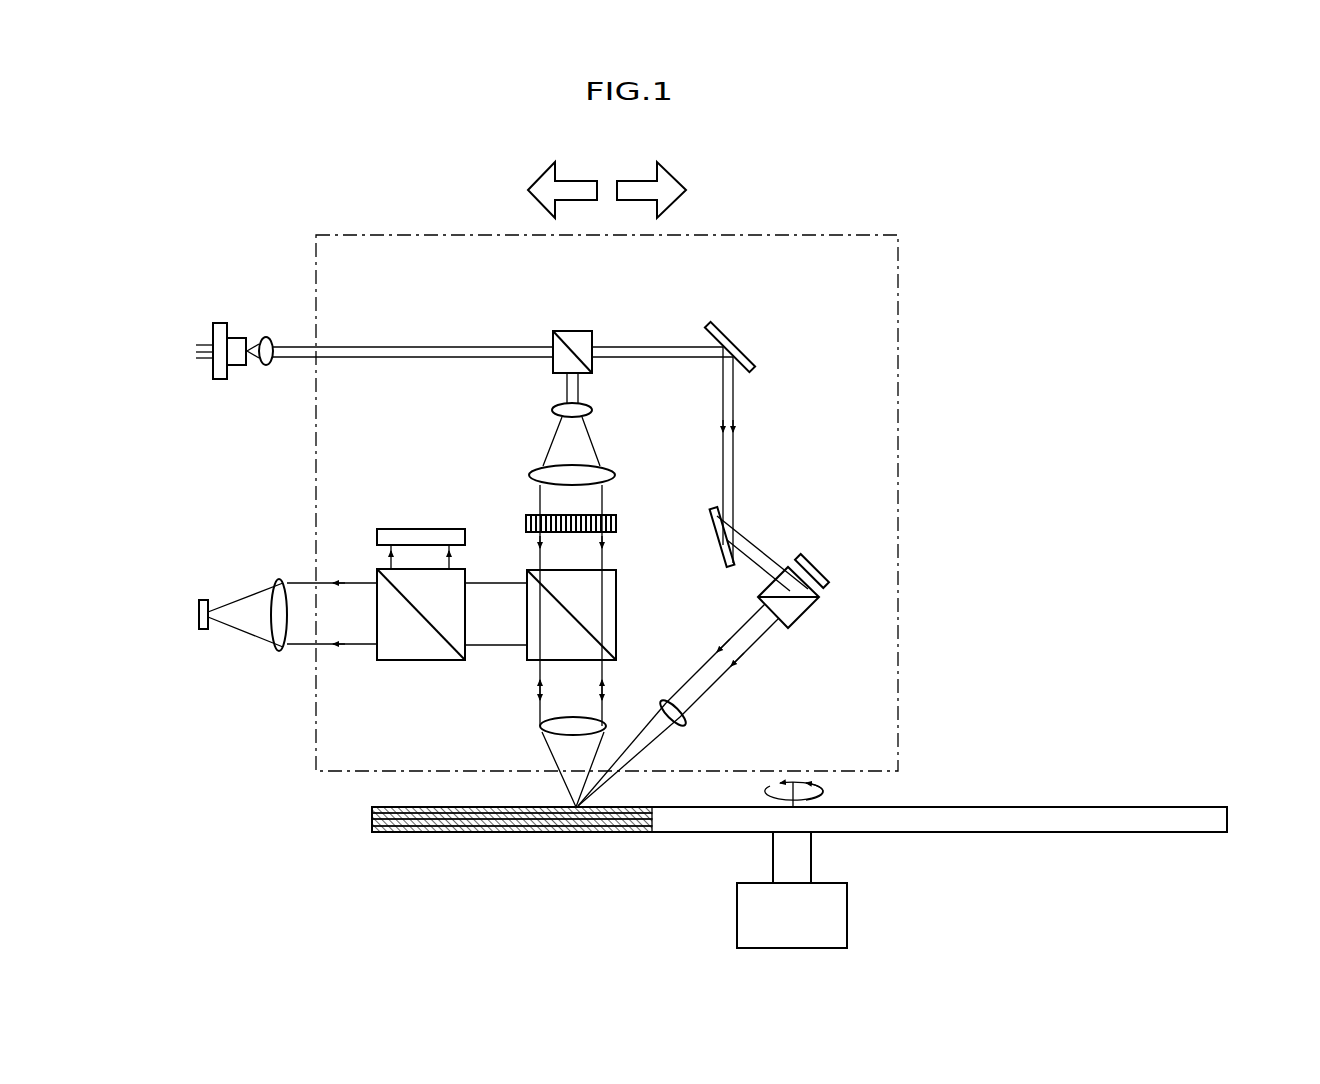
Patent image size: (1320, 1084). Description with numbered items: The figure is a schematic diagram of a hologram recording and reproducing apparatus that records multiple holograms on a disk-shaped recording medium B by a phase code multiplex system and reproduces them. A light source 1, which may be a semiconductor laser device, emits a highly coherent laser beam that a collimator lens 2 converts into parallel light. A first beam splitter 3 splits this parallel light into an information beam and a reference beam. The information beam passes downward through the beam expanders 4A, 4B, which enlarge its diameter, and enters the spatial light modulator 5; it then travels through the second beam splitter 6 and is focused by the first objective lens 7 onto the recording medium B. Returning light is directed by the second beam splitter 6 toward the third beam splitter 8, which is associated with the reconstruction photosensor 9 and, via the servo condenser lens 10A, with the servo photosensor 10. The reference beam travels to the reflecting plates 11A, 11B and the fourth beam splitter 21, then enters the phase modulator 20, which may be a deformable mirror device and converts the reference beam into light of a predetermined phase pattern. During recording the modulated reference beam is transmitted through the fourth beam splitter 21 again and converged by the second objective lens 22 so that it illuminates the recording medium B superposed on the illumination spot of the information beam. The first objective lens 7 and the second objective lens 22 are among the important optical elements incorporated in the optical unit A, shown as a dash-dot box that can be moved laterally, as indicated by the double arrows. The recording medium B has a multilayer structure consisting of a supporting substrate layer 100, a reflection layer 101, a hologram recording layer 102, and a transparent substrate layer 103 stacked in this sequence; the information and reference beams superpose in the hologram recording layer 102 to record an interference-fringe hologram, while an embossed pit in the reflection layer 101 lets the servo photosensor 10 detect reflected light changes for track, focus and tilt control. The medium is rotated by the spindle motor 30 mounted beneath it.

The light source 1 is at (215, 322).
The collimator lens 2 is at (263, 337).
The first beam splitter 3 is at (571, 330).
The beam expander 4A is at (552, 410).
The beam expander 4B is at (528, 474).
The spatial light modulator 5 is at (618, 523).
The second beam splitter 6 is at (617, 612).
The first objective lens 7 is at (540, 728).
The third beam splitter 8 is at (377, 571).
The reconstruction photosensor 9 is at (378, 531).
The servo photosensor 10 is at (201, 598).
The servo condenser lens 10A is at (278, 652).
The reflecting plate 11A is at (735, 336).
The reflecting plate 11B is at (713, 510).
The phase modulator 20 is at (826, 588).
The fourth beam splitter 21 is at (805, 618).
The second objective lens 22 is at (690, 717).
The spindle motor 30 is at (847, 922).
The supporting substrate layer 100 is at (372, 830).
The reflection layer 101 is at (372, 822).
The hologram recording layer 102 is at (372, 815).
The transparent substrate layer 103 is at (372, 808).
The optical unit A is at (898, 246).
The recording medium B is at (1020, 806).